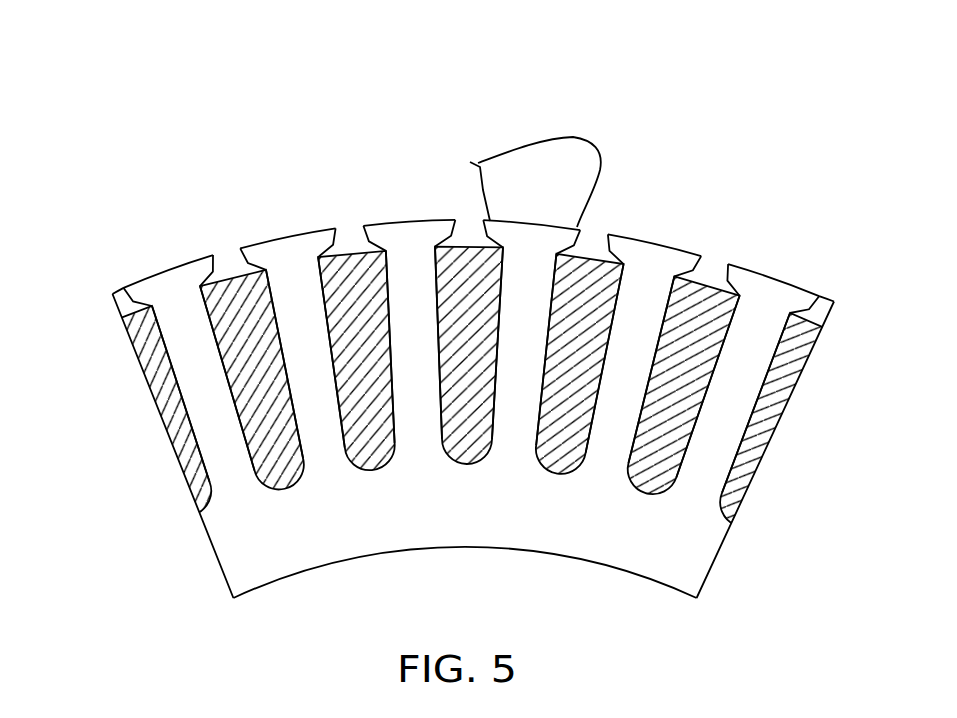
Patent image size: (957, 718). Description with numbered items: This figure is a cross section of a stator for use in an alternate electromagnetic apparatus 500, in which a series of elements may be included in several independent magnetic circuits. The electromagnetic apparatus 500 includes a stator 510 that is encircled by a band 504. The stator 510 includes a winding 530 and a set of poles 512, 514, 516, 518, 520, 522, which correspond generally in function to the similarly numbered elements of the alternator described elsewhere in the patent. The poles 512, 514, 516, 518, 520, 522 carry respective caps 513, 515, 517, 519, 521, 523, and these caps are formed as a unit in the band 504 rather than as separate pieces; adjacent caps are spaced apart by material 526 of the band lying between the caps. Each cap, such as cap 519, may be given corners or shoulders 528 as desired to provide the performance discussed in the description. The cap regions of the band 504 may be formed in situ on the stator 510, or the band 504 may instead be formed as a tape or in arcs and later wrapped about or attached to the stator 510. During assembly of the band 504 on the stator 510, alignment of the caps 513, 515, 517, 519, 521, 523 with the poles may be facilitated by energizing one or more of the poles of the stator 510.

The electromagnetic apparatus 500 is at (247, 62).
The band 504 is at (110, 301).
The stator 510 is at (721, 553).
The pole 512 is at (217, 388).
The pole 514 is at (327, 365).
The pole 516 is at (433, 349).
The pole 518 is at (540, 352).
The pole 520 is at (646, 367).
The pole 522 is at (752, 400).
The cap 513 is at (170, 266).
The cap 515 is at (307, 232).
The cap 517 is at (427, 218).
The cap 519 is at (511, 222).
The cap 521 is at (638, 237).
The cap 523 is at (760, 270).
The material between caps 526 is at (227, 250).
The corners or shoulders 528 is at (471, 162).
The winding 530 is at (143, 420).